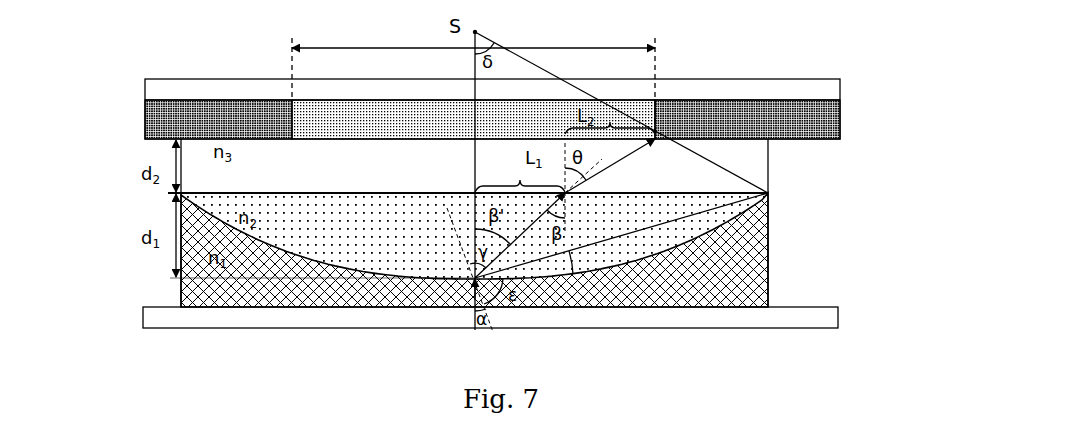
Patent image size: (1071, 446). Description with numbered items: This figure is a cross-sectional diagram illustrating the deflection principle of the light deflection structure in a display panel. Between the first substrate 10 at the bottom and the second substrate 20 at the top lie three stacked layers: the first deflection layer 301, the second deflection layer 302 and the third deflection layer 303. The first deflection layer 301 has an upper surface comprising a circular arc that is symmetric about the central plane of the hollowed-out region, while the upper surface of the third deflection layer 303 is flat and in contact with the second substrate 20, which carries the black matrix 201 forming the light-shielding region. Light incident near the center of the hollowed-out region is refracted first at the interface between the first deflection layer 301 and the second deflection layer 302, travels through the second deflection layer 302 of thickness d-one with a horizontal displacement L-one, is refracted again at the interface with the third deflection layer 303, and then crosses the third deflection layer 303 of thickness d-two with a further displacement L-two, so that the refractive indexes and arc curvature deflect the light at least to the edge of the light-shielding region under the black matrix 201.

The first substrate 10 is at (827, 315).
The second substrate 20 is at (826, 88).
The black matrix 201 is at (157, 126).
The first deflection layer 301 is at (737, 267).
The second deflection layer 302 is at (722, 215).
The third deflection layer 303 is at (337, 162).